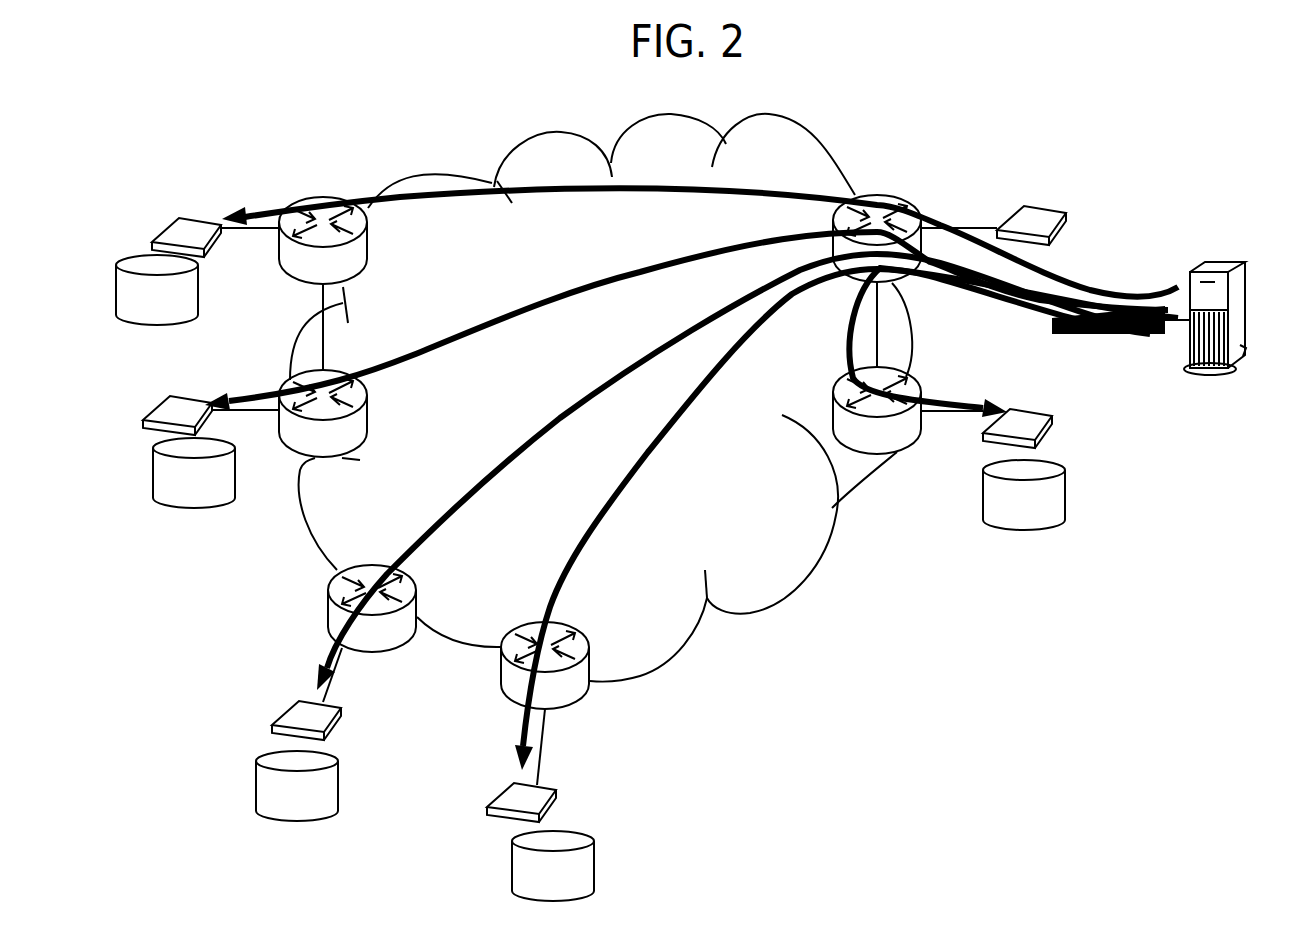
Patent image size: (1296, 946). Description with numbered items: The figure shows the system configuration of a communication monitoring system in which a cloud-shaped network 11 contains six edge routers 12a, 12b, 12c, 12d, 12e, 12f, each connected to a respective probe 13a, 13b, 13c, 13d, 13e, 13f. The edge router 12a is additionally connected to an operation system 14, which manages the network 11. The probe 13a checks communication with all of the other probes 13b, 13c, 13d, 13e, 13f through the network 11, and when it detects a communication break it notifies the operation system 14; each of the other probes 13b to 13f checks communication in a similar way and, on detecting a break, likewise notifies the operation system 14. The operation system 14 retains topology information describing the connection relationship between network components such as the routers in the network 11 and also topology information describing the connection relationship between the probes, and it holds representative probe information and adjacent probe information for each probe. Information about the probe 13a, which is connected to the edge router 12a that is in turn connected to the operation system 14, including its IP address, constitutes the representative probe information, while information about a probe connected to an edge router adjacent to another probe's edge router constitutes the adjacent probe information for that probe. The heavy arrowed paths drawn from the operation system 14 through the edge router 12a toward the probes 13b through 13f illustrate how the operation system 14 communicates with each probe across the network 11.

The network 11 is at (690, 112).
The edge router 12a is at (878, 200).
The edge router 12b is at (918, 392).
The edge router 12c is at (310, 205).
The edge router 12d is at (297, 372).
The edge router 12e is at (390, 662).
The edge router 12f is at (580, 712).
The probe 13a is at (1025, 210).
The probe 13b is at (1030, 410).
The probe 13c is at (152, 236).
The probe 13d is at (145, 432).
The probe 13e is at (280, 710).
The probe 13f is at (500, 825).
The operation system 14 is at (1245, 290).